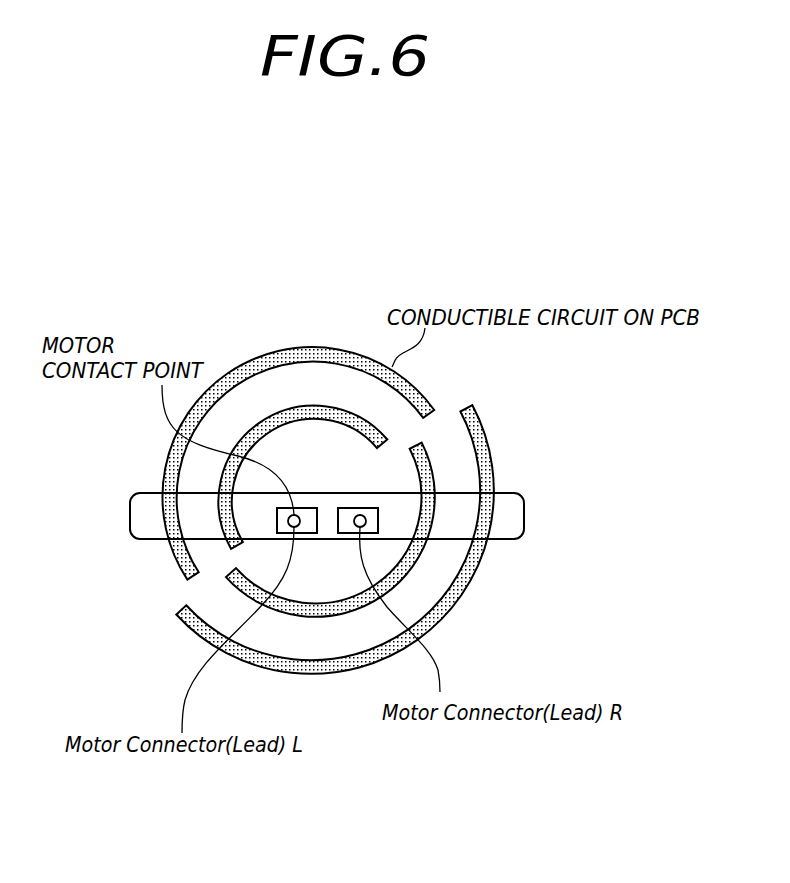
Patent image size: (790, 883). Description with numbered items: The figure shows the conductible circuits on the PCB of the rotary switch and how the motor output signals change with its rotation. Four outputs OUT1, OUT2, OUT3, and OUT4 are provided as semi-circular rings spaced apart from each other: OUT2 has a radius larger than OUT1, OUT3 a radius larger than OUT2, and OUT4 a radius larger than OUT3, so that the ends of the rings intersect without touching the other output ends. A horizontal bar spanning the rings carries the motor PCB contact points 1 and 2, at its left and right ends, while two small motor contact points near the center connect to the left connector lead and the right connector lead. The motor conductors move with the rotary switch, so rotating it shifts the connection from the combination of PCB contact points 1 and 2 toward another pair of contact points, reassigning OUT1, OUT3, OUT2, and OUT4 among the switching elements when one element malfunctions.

The PCB contact point 1 is at (216, 516).
The PCB contact point 2 is at (436, 516).
The motor output OUT1 is at (302, 462).
The motor output OUT2 is at (330, 543).
The motor output OUT3 is at (298, 450).
The motor output OUT4 is at (335, 554).